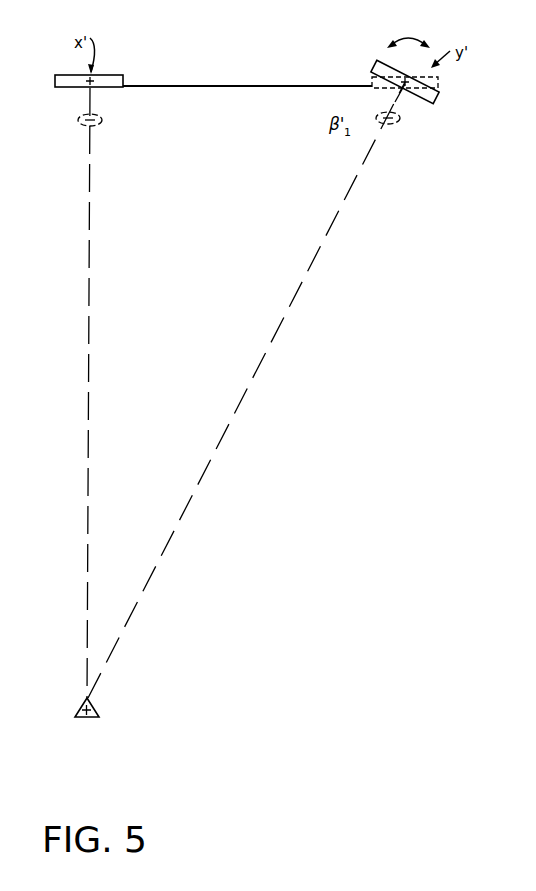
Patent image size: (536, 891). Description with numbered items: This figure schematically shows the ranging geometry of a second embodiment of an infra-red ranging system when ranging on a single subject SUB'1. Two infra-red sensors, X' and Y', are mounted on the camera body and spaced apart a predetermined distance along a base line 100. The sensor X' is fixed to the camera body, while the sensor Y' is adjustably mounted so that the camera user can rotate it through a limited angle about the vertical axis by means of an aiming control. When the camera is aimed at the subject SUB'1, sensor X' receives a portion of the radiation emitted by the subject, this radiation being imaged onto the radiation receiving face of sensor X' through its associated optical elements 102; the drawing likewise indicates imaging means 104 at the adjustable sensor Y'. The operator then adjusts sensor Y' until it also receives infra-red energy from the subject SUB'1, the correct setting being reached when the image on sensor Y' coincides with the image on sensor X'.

The base line 100 is at (213, 87).
The optical elements 102 is at (103, 120).
The rotation axis point y' 104 is at (399, 123).
The subject SUB'1 is at (120, 726).